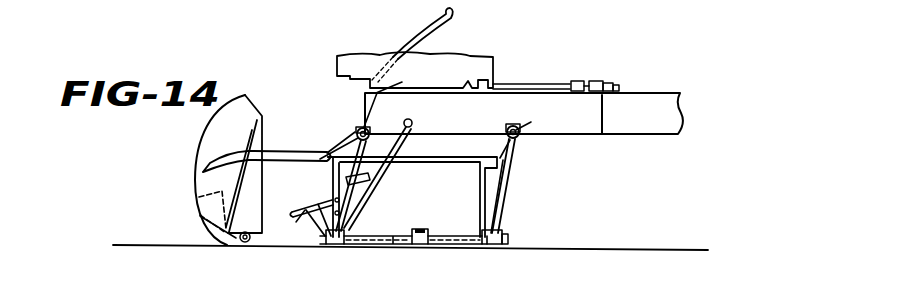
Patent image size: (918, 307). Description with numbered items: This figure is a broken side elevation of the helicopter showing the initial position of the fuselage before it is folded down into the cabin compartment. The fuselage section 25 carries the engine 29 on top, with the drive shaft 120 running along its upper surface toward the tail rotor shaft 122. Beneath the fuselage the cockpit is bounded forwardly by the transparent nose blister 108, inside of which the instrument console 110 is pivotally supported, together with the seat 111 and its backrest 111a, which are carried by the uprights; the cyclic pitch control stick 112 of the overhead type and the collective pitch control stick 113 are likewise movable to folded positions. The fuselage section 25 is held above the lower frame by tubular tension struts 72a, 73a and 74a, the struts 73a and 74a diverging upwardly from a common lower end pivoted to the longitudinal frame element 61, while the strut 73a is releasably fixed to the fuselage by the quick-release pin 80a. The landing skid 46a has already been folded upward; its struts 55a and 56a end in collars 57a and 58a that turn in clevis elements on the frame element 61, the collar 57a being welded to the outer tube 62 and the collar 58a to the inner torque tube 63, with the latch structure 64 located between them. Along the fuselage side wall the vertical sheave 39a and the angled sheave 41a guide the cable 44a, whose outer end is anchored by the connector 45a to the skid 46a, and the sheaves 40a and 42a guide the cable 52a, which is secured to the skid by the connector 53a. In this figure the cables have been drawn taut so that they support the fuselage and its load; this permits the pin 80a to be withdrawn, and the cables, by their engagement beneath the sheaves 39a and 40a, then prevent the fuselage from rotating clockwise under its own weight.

The fuselage section 25 is at (588, 143).
The engine 29 is at (496, 70).
The sheave 39a is at (378, 91).
The sheave 40a is at (511, 126).
The sheave 41a is at (391, 122).
The sheave 42a is at (532, 120).
The cable 44a is at (347, 146).
The connector 45a is at (320, 158).
The landing skid 46a is at (272, 151).
The cable 52a is at (506, 157).
The connector 53a is at (482, 165).
The strut 55a is at (334, 173).
The strut 56a is at (490, 203).
The collar 57a is at (337, 245).
The collar 58a is at (484, 248).
The frame element 61 is at (498, 239).
The outer tube 62 is at (366, 247).
The inner torque tube 63 is at (470, 247).
The latch structure 64 is at (418, 247).
The strut 72a is at (507, 174).
The strut 73a is at (353, 205).
The strut 74a is at (343, 185).
The pin 80a is at (413, 123).
The nose blister 108 is at (213, 139).
The instrument console 110 is at (204, 200).
The seat 111 is at (316, 196).
The backrest 111a is at (347, 180).
The cyclic pitch control stick 112 is at (416, 42).
The collective pitch control stick 113 is at (302, 209).
The drive shaft 120 is at (529, 84).
The tail rotor shaft 122 is at (618, 88).